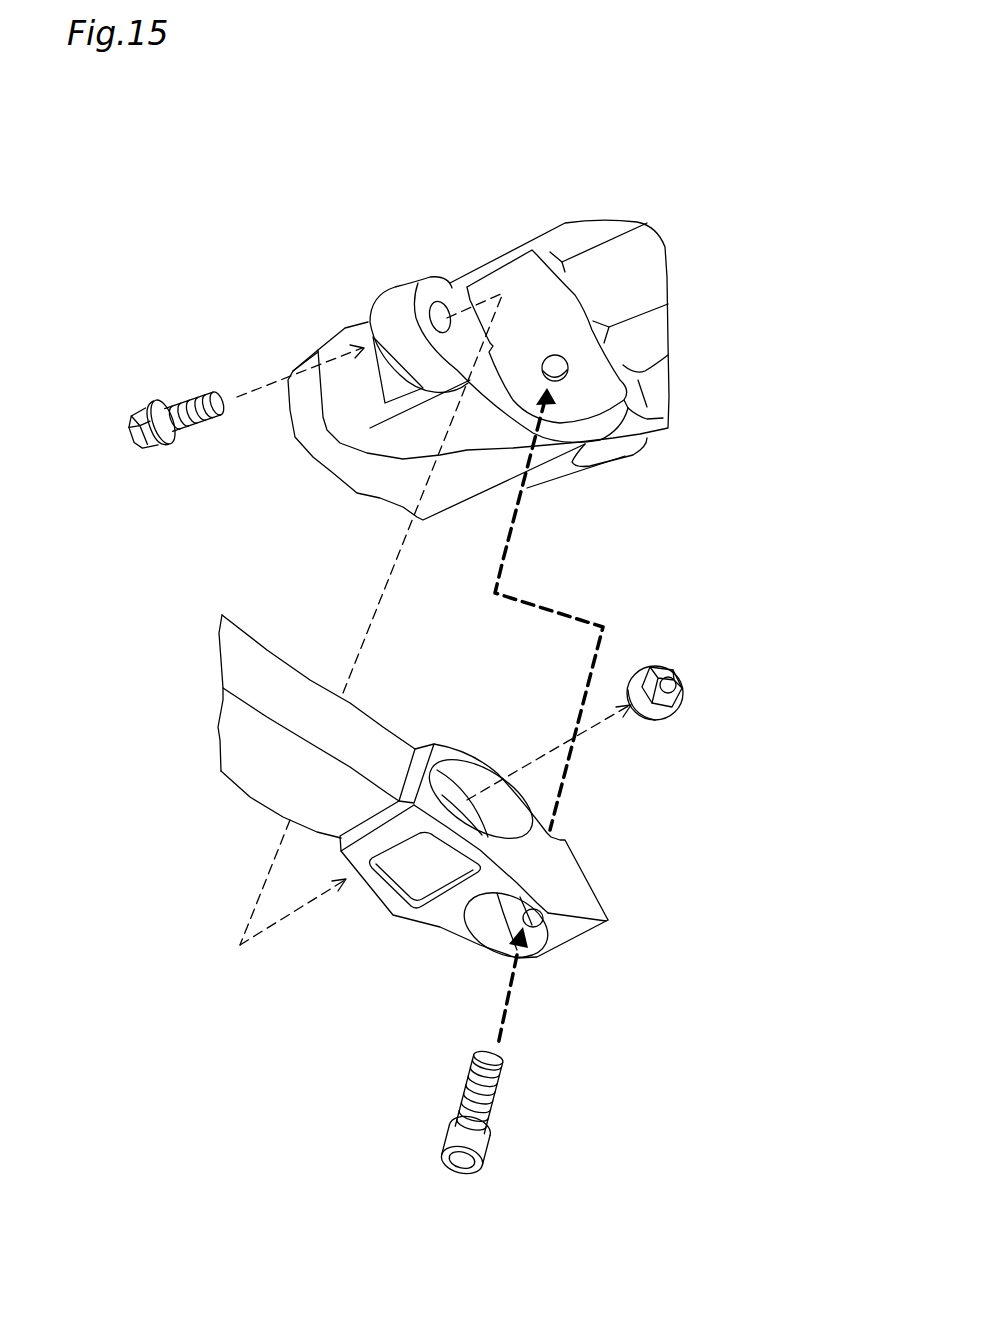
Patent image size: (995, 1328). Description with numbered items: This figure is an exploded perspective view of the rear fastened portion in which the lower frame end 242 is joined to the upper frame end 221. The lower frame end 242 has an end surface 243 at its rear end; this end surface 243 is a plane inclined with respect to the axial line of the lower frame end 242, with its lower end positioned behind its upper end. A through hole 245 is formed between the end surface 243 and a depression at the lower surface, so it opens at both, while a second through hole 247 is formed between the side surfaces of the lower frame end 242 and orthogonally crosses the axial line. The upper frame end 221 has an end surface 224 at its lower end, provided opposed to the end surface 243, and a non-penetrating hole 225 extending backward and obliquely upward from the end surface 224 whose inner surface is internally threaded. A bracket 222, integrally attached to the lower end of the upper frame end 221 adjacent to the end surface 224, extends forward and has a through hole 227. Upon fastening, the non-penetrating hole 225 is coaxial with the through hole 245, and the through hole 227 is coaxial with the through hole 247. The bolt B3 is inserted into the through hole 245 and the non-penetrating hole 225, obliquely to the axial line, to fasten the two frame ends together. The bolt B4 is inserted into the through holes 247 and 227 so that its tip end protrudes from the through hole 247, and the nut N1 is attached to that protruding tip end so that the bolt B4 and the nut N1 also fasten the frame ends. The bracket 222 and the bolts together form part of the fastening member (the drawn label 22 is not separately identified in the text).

The bracket 22 is at (622, 214).
The upper frame end 221 is at (642, 341).
The bracket 222 is at (393, 285).
The end surface 224 is at (531, 293).
The non-penetrating hole 225 is at (568, 378).
The through hole 227 is at (436, 276).
The lower frame end 242 is at (398, 932).
The end surface 243 is at (585, 870).
The through hole 245 is at (537, 920).
The through hole 247 is at (458, 800).
The bolt B3 is at (482, 1172).
The bolt B4 is at (192, 402).
The nut N1 is at (652, 666).